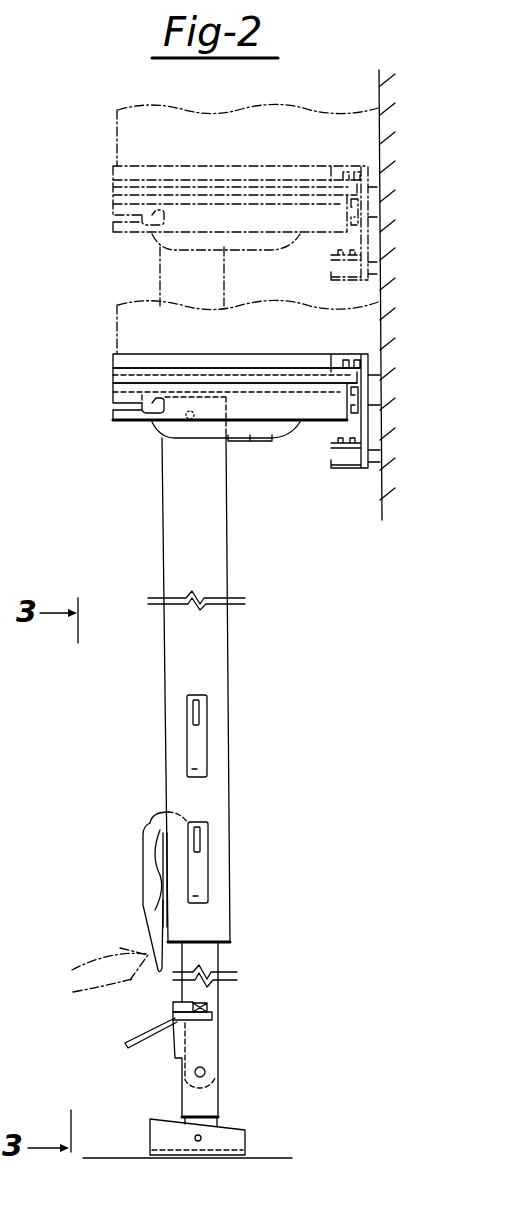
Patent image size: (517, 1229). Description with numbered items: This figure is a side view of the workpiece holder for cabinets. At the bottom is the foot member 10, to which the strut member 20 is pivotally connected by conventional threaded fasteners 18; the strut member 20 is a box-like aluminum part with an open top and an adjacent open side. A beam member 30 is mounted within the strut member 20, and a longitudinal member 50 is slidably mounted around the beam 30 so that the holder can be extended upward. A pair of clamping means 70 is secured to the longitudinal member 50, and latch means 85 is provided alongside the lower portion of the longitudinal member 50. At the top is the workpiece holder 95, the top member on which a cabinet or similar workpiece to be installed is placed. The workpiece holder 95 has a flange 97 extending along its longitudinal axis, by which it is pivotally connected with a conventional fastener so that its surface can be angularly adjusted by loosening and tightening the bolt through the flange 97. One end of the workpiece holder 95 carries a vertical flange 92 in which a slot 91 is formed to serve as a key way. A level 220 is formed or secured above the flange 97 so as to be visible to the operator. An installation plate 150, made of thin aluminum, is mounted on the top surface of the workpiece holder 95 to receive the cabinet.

The foot member 10 is at (235, 1132).
The threaded fasteners 18 is at (195, 1137).
The strut member 20 is at (223, 1080).
The beam member 30 is at (220, 953).
The longitudinal member 50 is at (230, 548).
The clamping means 70 is at (207, 750).
The latch means 85 is at (150, 865).
The slot 91 is at (118, 410).
The vertical flange 92 is at (113, 397).
The workpiece holder 95 is at (112, 377).
The flange 97 is at (272, 441).
The installation plate 150 is at (113, 362).
The level 220 is at (280, 440).